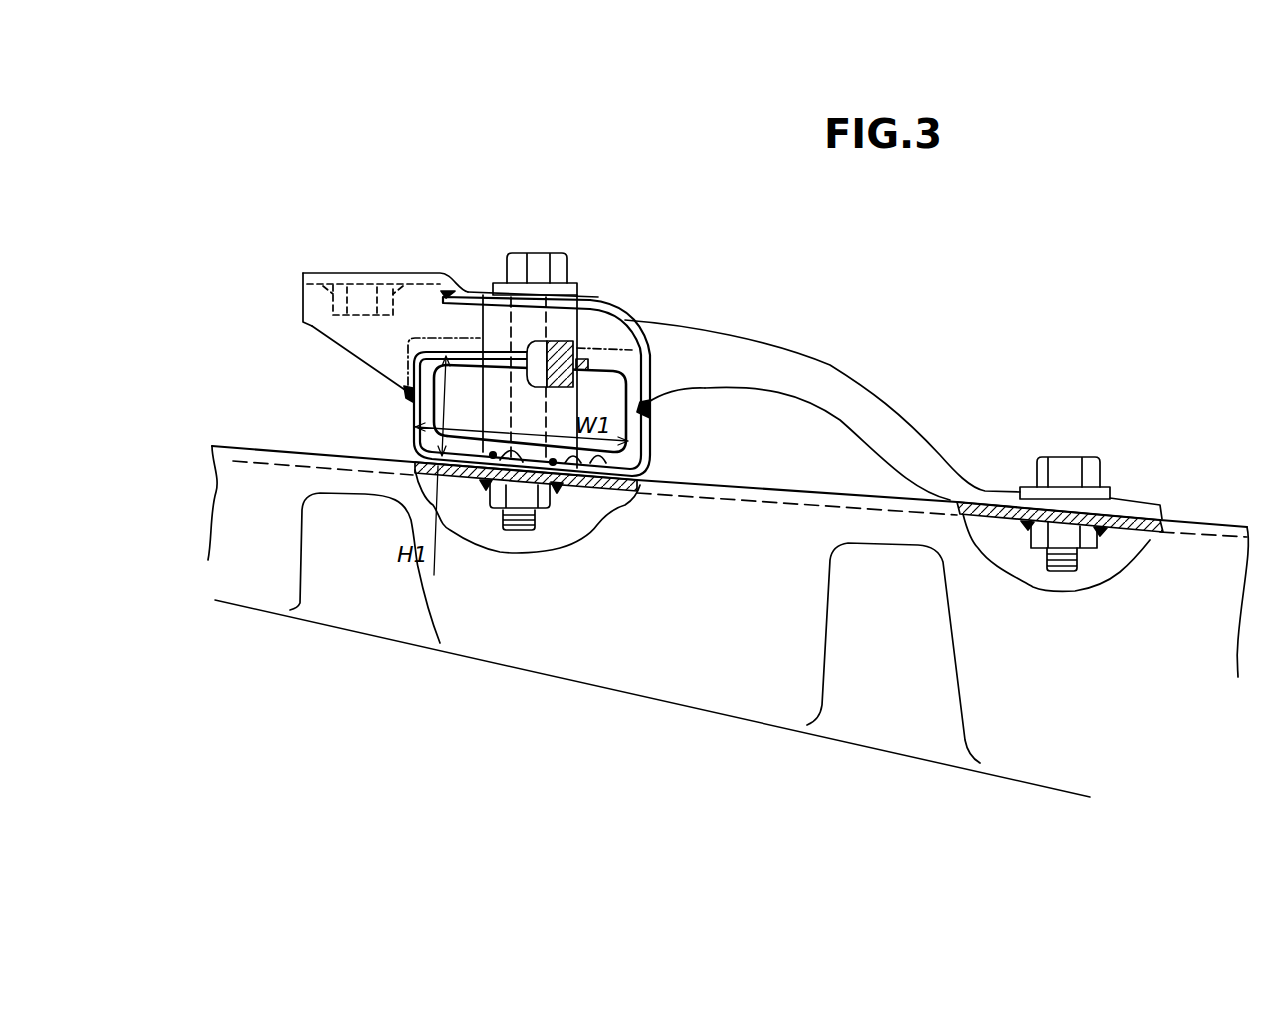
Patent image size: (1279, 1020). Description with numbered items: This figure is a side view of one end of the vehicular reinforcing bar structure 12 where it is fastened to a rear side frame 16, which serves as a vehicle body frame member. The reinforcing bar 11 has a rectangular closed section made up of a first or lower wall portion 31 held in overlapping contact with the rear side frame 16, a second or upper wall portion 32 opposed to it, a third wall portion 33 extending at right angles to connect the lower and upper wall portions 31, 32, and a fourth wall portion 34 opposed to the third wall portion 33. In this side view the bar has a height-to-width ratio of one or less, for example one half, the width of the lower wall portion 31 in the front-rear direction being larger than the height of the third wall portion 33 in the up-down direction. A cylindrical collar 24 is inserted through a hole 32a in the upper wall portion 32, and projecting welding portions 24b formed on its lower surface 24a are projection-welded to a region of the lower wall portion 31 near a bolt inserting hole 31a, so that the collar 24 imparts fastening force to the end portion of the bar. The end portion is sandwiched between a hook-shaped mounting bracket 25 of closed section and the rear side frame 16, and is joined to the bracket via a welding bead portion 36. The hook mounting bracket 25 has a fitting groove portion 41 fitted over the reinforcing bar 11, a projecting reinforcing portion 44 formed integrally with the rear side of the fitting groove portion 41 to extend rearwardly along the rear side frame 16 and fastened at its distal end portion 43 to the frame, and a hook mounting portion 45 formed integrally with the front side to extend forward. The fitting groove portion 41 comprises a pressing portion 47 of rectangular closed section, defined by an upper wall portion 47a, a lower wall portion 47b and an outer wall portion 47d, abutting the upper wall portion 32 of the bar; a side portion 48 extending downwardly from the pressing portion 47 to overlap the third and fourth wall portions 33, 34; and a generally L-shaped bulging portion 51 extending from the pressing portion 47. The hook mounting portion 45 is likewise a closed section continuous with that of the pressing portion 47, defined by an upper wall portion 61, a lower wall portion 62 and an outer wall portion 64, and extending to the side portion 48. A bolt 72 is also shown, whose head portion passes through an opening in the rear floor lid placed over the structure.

The reinforcing bar 11 is at (401, 424).
The vehicular reinforcing bar structure 12 is at (344, 204).
The rear side frame 16 is at (196, 640).
The collar 24 is at (562, 505).
The lower surface 24a is at (477, 465).
The projecting welding portion 24b is at (517, 512).
The hook mounting bracket 25 is at (673, 225).
The first or lower wall portion 31 is at (628, 458).
The bolt inserting hole 31a is at (530, 532).
The second or upper wall portion 32 is at (650, 352).
The hole 32a is at (653, 415).
The third wall portion 33 is at (412, 428).
The fourth wall portion 34 is at (645, 445).
The welding bead portion 36 is at (647, 430).
The fitting groove portion 41 is at (477, 290).
The distal end portion 43 is at (994, 495).
The projecting reinforcing portion 44 is at (849, 375).
The hook mounting portion 45 is at (418, 270).
The pressing portion 47 is at (406, 341).
The upper wall portion 47a is at (590, 298).
The lower wall portion 47b is at (632, 322).
The outer wall portion 47d is at (619, 315).
The side portion 48 is at (402, 375).
The bulging portion 51 is at (578, 362).
The upper wall portion 61 is at (407, 272).
The lower wall portion 62 is at (485, 350).
The outer wall portion 64 is at (317, 308).
The bolt 72 is at (530, 256).